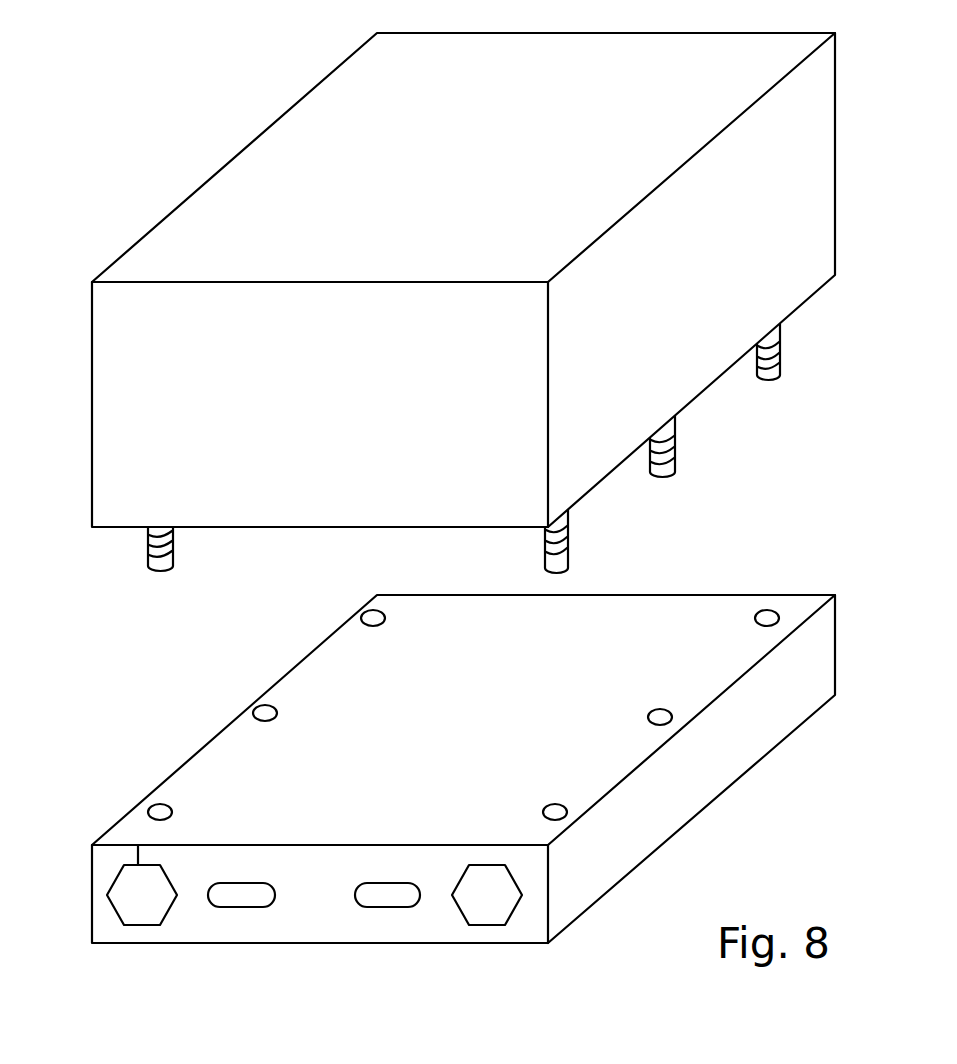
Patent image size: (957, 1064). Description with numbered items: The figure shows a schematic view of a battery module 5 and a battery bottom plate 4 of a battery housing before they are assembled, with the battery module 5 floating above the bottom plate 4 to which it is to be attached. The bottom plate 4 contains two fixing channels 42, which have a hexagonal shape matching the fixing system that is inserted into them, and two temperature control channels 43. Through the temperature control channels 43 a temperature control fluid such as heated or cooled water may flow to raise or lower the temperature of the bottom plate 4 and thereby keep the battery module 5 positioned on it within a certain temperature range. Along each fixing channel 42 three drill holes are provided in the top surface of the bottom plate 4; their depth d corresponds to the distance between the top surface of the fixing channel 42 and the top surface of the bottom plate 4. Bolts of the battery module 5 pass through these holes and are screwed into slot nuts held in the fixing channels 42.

The battery module 5 is at (210, 170).
The bottom plate 4 is at (193, 783).
The fixing channels 42 is at (147, 904).
The temperature control channels 43 is at (249, 904).
The depth d is at (136, 858).